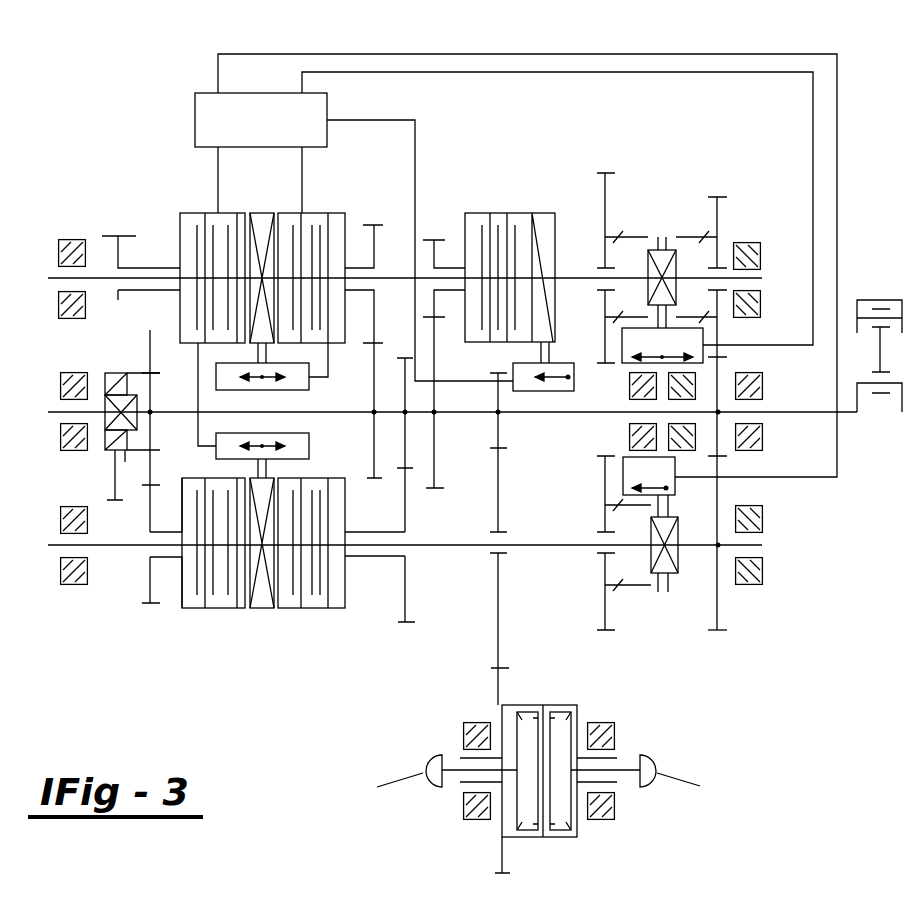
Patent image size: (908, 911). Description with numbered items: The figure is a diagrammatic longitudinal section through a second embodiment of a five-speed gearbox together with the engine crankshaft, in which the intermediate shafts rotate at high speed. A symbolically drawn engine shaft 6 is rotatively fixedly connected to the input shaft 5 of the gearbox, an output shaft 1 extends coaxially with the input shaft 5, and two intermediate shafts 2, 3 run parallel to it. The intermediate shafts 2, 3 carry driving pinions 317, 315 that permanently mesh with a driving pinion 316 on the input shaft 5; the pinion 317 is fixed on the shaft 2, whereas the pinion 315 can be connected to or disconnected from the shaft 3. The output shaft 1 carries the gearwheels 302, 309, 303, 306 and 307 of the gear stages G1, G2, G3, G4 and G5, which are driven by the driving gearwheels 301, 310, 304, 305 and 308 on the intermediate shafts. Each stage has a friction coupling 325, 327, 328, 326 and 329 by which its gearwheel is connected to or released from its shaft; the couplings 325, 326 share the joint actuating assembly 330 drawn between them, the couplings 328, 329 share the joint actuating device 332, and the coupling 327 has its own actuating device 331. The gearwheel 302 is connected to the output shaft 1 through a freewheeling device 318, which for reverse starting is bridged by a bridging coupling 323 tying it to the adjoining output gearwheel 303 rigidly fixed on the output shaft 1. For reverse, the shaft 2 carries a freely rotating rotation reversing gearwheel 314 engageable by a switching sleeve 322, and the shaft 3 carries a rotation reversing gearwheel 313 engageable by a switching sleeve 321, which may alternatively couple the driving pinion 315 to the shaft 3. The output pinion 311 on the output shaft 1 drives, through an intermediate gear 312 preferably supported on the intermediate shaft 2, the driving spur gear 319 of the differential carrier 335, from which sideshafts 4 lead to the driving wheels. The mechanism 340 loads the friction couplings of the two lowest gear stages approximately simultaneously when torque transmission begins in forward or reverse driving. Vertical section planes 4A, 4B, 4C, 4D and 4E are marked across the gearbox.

The loading mechanism 340 is at (206, 92).
The intermediate shaft 3 is at (55, 277).
The output shaft 1 is at (55, 411).
The intermediate shaft 2 is at (55, 544).
The sideshafts 4 is at (448, 780).
The input shaft 5 is at (812, 413).
The engine shaft 6 is at (847, 413).
The driving gearwheel 301 is at (108, 232).
The gearwheel 302 is at (112, 473).
The gearwheel 303 is at (165, 325).
The driving gearwheel 304 is at (142, 604).
The driving gearwheel 305 is at (372, 240).
The gearwheel 306 is at (374, 425).
The gearwheel 307 is at (405, 380).
The driving gearwheel 308 is at (407, 598).
The gearwheel 309 is at (435, 435).
The driving gearwheel 310 is at (435, 253).
The output pinion 311 is at (498, 390).
The intermediate gear 312 is at (498, 613).
The rotation reversing gearwheel 313 is at (605, 182).
The rotation reversing gearwheel 314 is at (605, 609).
The driving pinion 315 is at (718, 213).
The driving pinion 316 is at (723, 372).
The driving pinion 317 is at (720, 612).
The freewheeling device 318 is at (105, 375).
The driving spur gear 319 is at (502, 848).
The switching sleeve 321 is at (661, 252).
The switching sleeve 322 is at (663, 594).
The bridging coupling 323 is at (147, 455).
The friction coupling 325 is at (207, 212).
The friction coupling 326 is at (318, 232).
The friction coupling 327 is at (505, 225).
The friction coupling 328 is at (218, 607).
The friction coupling 329 is at (318, 610).
The synchronizer 330 is at (263, 226).
The actuating device 331 is at (545, 222).
The joint actuating device 332 is at (262, 610).
The differential carrier 335 is at (555, 837).
The first gear stage G1 is at (111, 123).
The second gear stage G2 is at (433, 223).
The third gear stage G3 is at (152, 620).
The fourth gear stage G4 is at (372, 208).
The fifth gear stage G5 is at (406, 637).
The section line 4A is at (111, 220).
The section line 4B is at (392, 163).
The section line 4C is at (497, 160).
The section line 4D is at (605, 162).
The section line 4E is at (717, 162).